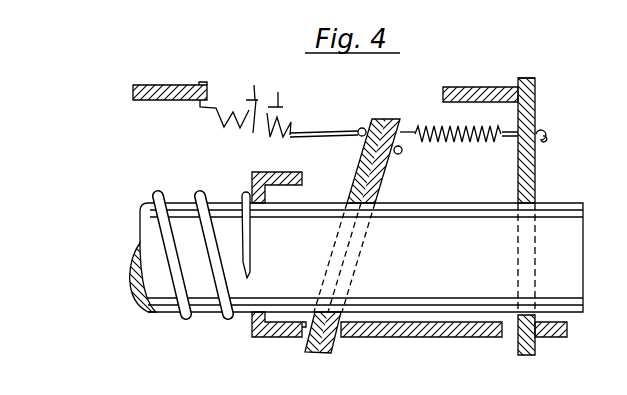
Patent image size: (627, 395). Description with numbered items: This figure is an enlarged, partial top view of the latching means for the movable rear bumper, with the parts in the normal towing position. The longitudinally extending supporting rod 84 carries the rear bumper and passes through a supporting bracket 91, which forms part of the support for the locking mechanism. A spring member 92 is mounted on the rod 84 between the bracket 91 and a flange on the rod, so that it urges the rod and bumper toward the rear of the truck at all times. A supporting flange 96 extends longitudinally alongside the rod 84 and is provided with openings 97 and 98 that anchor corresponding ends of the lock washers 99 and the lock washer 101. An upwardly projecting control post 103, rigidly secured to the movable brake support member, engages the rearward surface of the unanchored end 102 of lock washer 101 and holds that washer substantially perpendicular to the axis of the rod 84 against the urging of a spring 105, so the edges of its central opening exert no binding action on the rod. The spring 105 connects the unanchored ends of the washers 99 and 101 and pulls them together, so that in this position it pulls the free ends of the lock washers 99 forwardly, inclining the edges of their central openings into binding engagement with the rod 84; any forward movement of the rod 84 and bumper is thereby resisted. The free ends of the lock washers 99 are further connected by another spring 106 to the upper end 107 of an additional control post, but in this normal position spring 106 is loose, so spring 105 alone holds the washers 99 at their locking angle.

The supporting rod 84 is at (158, 302).
The supporting bracket 91 is at (254, 320).
The spring member 92 is at (190, 318).
The supporting flange 96 is at (438, 338).
The opening 97 is at (305, 345).
The opening 98 is at (512, 337).
The lock washers 99 is at (386, 119).
The lock washer 101 is at (536, 160).
The unanchored end 102 is at (536, 93).
The control post 103 is at (497, 87).
The spring 105 is at (452, 142).
The spring 106 is at (290, 112).
The upper end of control post 107 is at (163, 101).